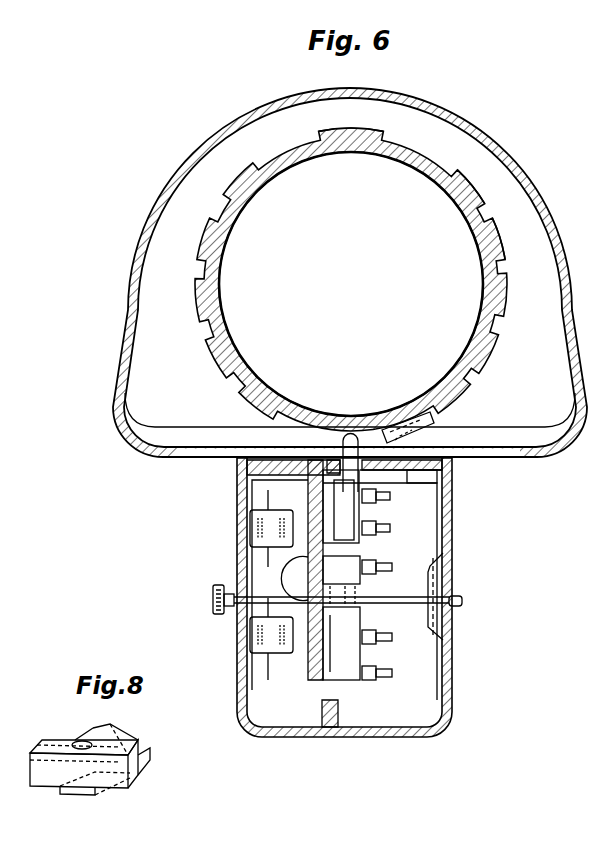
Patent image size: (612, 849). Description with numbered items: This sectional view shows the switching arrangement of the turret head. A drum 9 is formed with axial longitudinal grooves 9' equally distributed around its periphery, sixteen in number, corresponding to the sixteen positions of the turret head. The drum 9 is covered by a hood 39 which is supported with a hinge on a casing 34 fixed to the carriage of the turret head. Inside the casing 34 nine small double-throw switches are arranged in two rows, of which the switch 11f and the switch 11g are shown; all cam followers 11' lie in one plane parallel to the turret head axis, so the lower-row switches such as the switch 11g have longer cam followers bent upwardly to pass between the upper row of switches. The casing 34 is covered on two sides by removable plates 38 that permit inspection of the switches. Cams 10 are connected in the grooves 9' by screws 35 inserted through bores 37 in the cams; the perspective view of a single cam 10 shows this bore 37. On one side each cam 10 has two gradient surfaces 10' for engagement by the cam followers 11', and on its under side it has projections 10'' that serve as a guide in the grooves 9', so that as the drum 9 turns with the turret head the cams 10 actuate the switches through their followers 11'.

In FIG. 6, the hood 39 is at (478, 148).
In FIG. 6, the drum 9 is at (376, 279).
In FIG. 6, the grooves 9' is at (454, 204).
In FIG. 6, the cam 10 is at (452, 419).
In FIG. 8, the cam 10 is at (84, 747).
In FIG. 8, the gradient surfaces 10' is at (122, 740).
In FIG. 6, the projections 10'' is at (462, 406).
In FIG. 8, the projections 10'' is at (100, 797).
In FIG. 6, the screw 35 is at (405, 434).
In FIG. 6, the casing 34 is at (382, 730).
In FIG. 6, the removable plates 38 is at (238, 624).
In FIG. 6, the cam followers 11' is at (428, 489).
In FIG. 6, the switch 11f is at (347, 508).
In FIG. 6, the switch 11g is at (343, 655).
In FIG. 8, the bore 37 is at (100, 740).